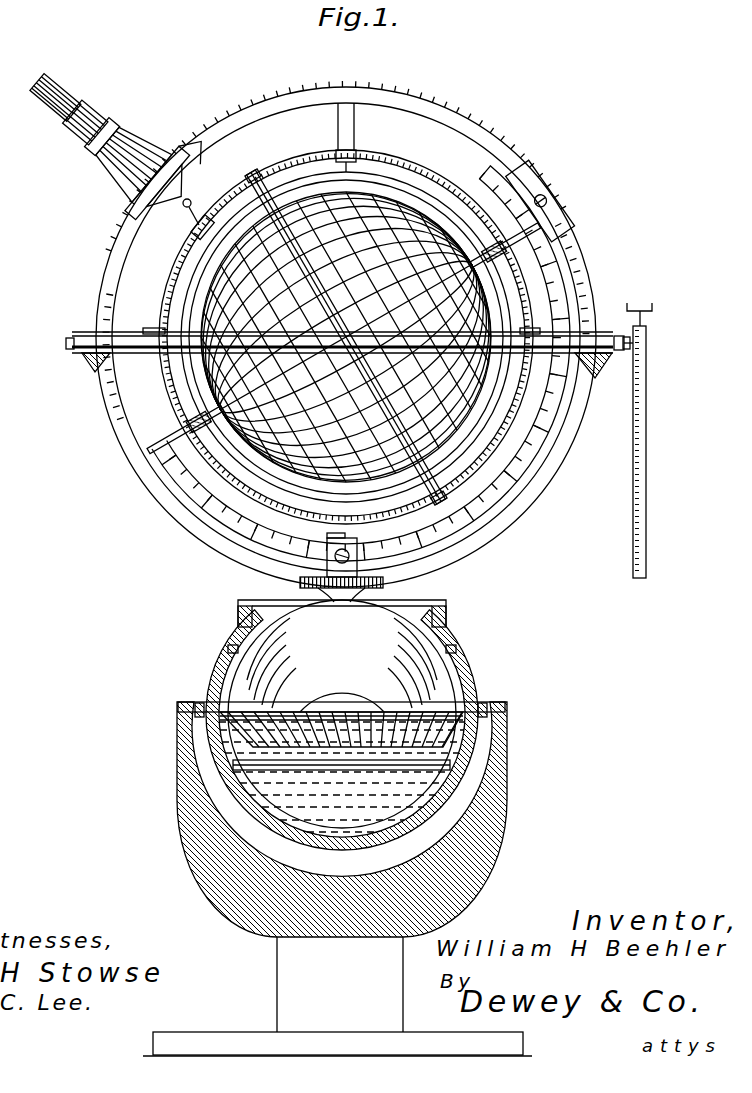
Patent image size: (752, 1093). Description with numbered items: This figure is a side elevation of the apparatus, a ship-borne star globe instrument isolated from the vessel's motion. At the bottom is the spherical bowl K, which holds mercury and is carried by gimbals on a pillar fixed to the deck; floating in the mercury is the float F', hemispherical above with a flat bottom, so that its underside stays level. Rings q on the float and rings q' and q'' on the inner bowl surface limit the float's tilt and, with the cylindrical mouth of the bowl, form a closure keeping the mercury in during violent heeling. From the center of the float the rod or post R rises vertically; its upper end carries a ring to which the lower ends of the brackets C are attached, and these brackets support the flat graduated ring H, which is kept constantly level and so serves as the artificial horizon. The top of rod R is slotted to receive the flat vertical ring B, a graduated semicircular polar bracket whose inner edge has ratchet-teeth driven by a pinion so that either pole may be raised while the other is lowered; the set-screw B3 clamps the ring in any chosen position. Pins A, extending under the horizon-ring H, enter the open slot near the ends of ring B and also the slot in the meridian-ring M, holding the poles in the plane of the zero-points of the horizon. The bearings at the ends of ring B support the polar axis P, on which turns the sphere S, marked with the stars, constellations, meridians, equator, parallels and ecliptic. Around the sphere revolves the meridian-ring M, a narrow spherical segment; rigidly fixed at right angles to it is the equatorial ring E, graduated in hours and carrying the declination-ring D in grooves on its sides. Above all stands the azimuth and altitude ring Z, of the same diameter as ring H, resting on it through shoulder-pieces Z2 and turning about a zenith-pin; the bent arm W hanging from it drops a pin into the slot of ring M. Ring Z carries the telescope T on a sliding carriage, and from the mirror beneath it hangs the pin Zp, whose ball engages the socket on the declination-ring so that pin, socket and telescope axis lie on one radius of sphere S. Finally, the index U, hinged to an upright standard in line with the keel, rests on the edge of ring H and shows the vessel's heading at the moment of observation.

The telescope T is at (100, 172).
The azimuth and altitude ring Z is at (204, 142).
The pin Zp is at (183, 210).
The bent arm W is at (352, 142).
The declination-ring D is at (426, 165).
The meridian-ring M is at (447, 212).
The shoulder-pieces Z2 is at (550, 196).
The polar axis P is at (512, 260).
The flat graduated ring H is at (134, 336).
The pins A is at (110, 358).
The sphere S is at (346, 337).
The equatorial ring E is at (392, 386).
The flat vertical ring B is at (540, 428).
The brackets C is at (150, 494).
The index U is at (646, 465).
The rod or post R is at (346, 548).
The set-screw B3 is at (365, 555).
The float sphere F is at (342, 714).
The ring q' is at (327, 626).
The rings q is at (325, 730).
The float F' is at (326, 724).
The lower plate in bowl q'' is at (307, 777).
The spherical bowl K is at (486, 792).